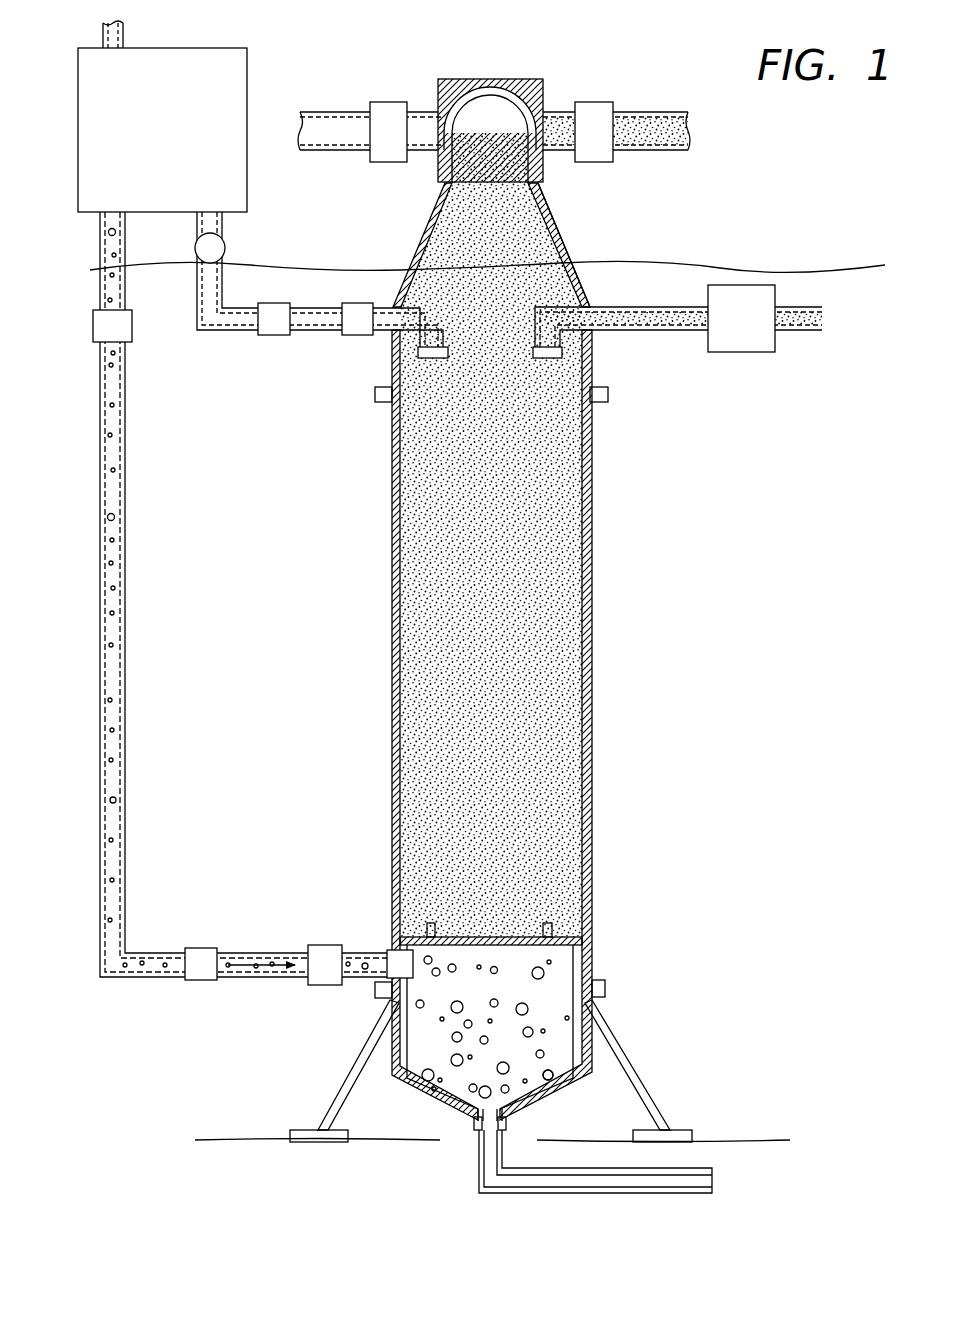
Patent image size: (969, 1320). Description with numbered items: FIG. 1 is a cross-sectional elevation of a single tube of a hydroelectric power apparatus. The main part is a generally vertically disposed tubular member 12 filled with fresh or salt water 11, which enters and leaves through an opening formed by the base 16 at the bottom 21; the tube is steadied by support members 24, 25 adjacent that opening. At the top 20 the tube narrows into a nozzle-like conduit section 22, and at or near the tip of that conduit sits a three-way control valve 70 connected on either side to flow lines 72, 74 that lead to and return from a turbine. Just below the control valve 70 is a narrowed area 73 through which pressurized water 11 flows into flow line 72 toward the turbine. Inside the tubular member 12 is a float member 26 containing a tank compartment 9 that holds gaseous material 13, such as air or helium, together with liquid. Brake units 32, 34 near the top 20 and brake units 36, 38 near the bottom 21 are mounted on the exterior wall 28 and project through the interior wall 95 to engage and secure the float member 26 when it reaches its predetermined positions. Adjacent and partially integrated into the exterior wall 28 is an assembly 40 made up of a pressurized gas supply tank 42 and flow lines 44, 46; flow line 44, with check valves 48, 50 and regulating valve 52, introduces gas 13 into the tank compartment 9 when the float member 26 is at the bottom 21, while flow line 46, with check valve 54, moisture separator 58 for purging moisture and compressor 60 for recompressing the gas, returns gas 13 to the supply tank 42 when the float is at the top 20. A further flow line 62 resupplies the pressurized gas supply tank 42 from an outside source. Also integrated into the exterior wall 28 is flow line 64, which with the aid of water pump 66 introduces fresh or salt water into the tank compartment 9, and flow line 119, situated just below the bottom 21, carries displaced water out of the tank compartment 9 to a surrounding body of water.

The tank compartment 9 is at (420, 1047).
The water 11 is at (547, 748).
The tubular member 12 is at (491, 639).
The gaseous material 13 is at (548, 1080).
The base 16 is at (395, 1085).
The top 20 is at (580, 280).
The bottom 21 is at (592, 1043).
The nozzle-like conduit section 22 is at (538, 188).
The support member 24 is at (350, 1067).
The support member 25 is at (633, 1067).
The float member 26 is at (587, 957).
The exterior wall 28 is at (592, 690).
The brake unit 32 is at (377, 395).
The brake unit 34 is at (608, 393).
The brake unit 36 is at (375, 988).
The brake unit 38 is at (606, 990).
The assembly 40 is at (63, 607).
The pressurized gas supply tank 42 is at (162, 130).
The flow line 44 is at (123, 648).
The flow line 46 is at (232, 330).
The check valve 48 is at (95, 322).
The check valve 50 is at (325, 945).
The regulating valve 52 is at (200, 948).
The check valve 54 is at (358, 340).
The moisture separator 58 is at (274, 340).
The compressor 60 is at (215, 248).
The flow line 62 is at (125, 35).
The flow line 64 is at (650, 332).
The water pump 66 is at (740, 352).
The 3-way control valve 70 is at (520, 103).
The flow line 72 is at (338, 112).
The narrowed area 73 is at (445, 188).
The flow line 74 is at (652, 112).
The interior wall 95 is at (400, 448).
The flow line 119 is at (513, 1193).